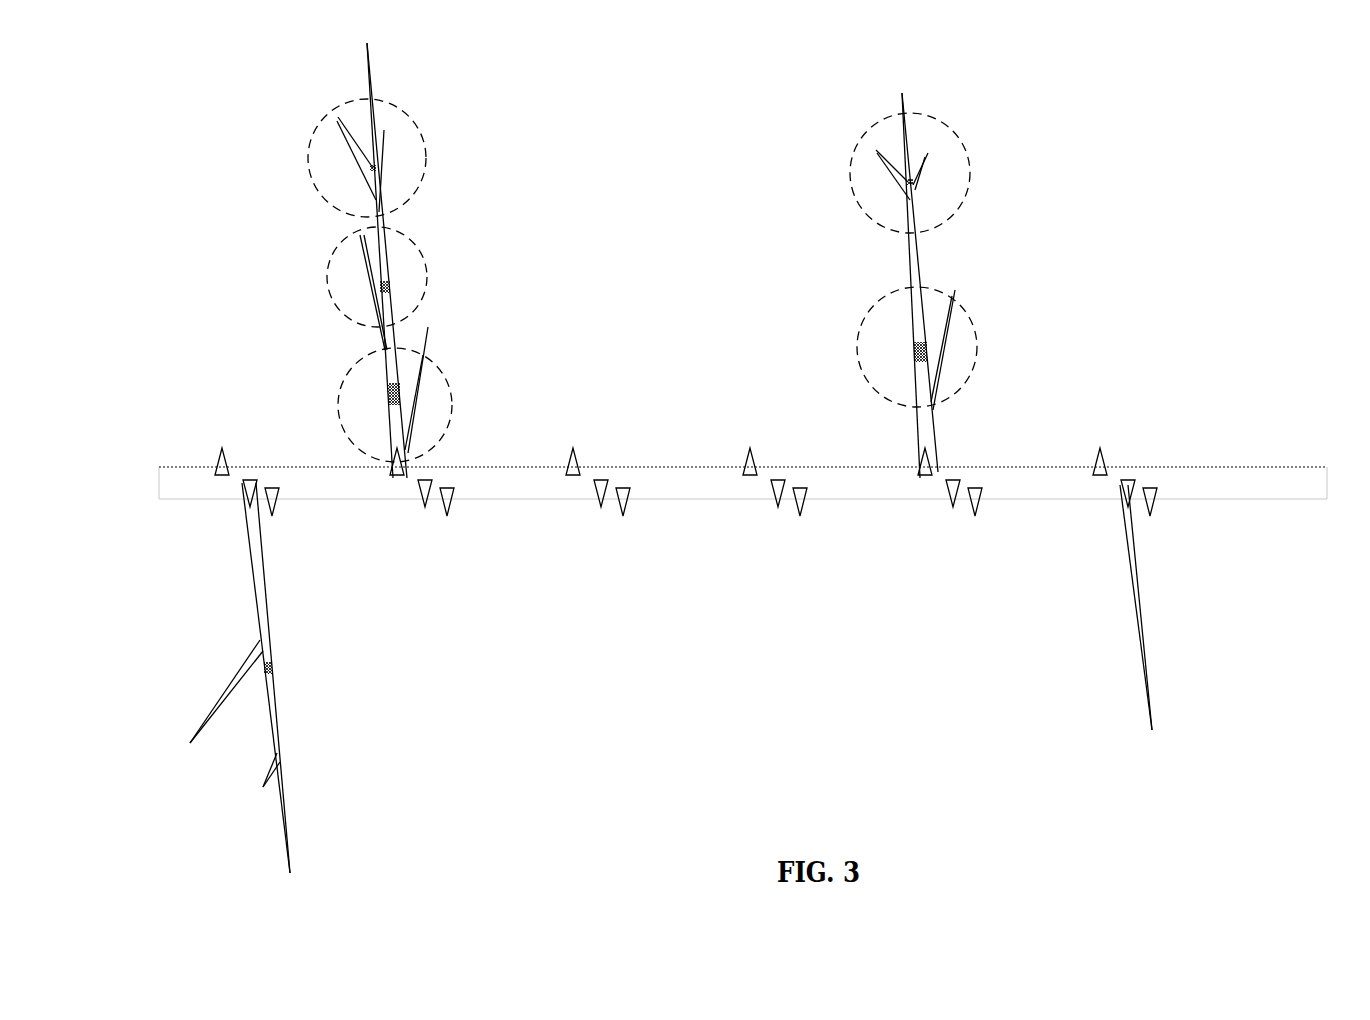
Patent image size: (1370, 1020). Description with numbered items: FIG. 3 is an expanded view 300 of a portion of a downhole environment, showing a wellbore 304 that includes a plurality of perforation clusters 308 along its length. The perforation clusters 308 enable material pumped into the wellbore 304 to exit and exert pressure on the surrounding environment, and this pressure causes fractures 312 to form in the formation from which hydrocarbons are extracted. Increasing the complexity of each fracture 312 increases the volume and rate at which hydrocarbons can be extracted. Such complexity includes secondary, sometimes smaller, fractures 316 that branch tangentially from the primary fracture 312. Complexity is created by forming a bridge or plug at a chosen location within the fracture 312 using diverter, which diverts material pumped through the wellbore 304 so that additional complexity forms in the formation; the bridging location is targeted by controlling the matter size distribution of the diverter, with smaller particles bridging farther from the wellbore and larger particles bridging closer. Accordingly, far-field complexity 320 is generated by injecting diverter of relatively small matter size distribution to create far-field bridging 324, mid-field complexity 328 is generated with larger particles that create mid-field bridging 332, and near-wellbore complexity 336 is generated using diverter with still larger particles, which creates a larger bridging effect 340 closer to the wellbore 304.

The fastening system 300 is at (1246, 140).
The wellbore 304 is at (216, 462).
The perforation clusters 308 is at (1296, 468).
The fracture 312 is at (372, 78).
The secondary fracture 316 is at (336, 119).
The far-field complexity 320 is at (426, 152).
The far-field bridging 324 is at (373, 168).
The mid-field complexity 328 is at (424, 270).
The mid-field bridging 332 is at (386, 288).
The near-wellbore complexity 336 is at (452, 407).
The bridging effect 340 is at (390, 393).